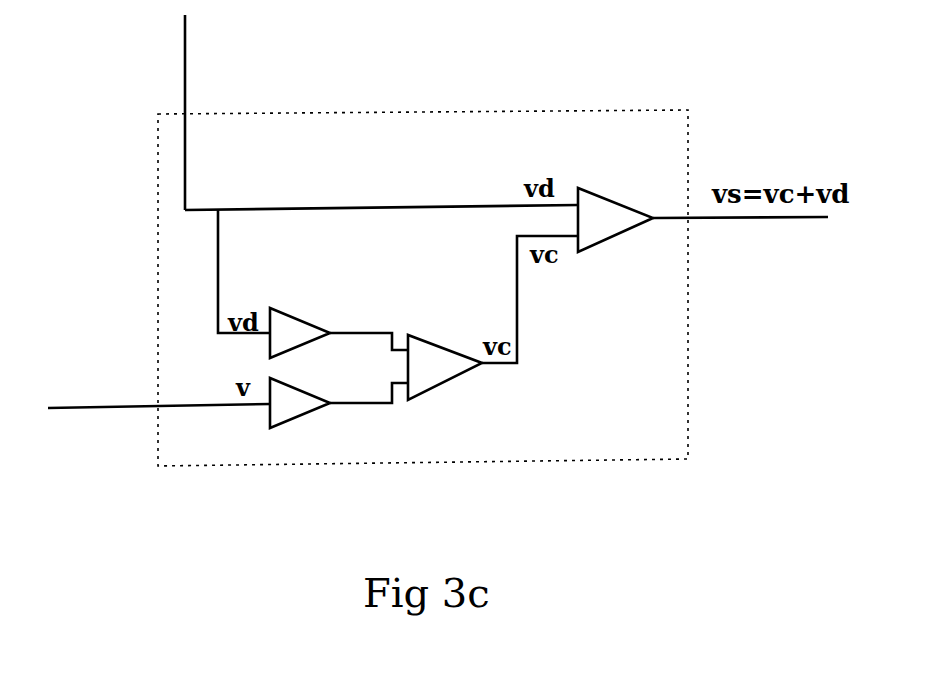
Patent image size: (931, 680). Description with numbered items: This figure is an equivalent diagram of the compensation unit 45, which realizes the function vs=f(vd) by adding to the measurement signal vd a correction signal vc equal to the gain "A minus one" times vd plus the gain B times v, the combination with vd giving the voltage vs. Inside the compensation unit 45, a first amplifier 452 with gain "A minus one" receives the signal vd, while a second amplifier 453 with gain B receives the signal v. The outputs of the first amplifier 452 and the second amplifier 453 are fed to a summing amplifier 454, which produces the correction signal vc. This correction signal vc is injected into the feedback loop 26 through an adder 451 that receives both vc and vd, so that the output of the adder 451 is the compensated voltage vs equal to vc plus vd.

The feedback loop 26 is at (186, 70).
The compensation unit 45 is at (588, 460).
The adder 451 is at (608, 196).
The first amplifier 452 is at (323, 286).
The second amplifier 453 is at (310, 413).
The summing amplifier 454 is at (455, 346).